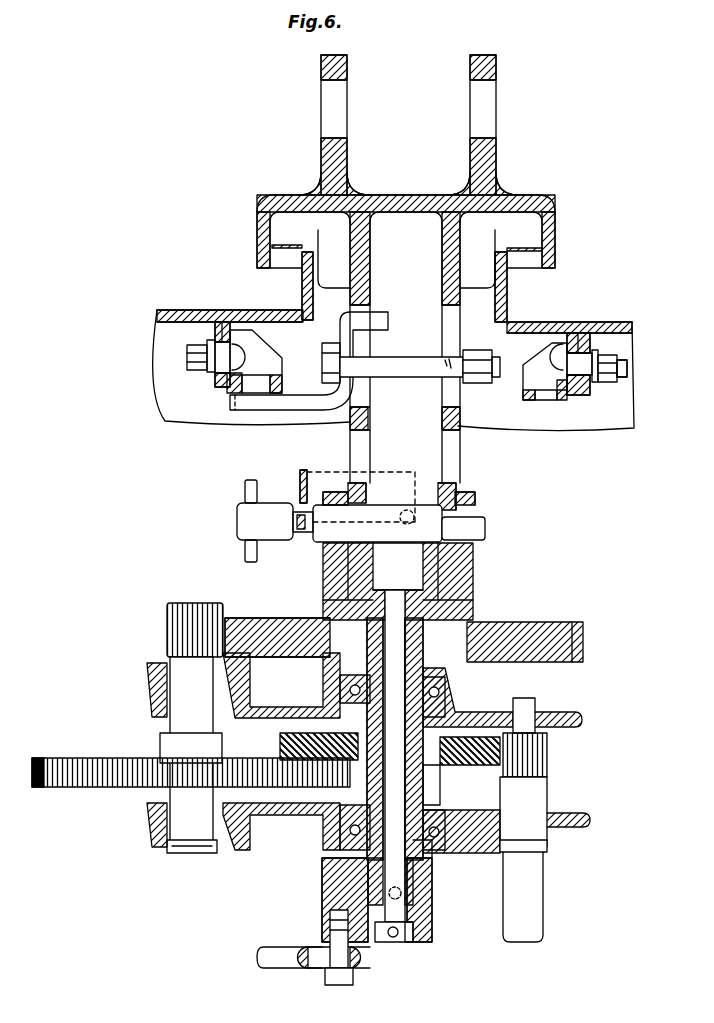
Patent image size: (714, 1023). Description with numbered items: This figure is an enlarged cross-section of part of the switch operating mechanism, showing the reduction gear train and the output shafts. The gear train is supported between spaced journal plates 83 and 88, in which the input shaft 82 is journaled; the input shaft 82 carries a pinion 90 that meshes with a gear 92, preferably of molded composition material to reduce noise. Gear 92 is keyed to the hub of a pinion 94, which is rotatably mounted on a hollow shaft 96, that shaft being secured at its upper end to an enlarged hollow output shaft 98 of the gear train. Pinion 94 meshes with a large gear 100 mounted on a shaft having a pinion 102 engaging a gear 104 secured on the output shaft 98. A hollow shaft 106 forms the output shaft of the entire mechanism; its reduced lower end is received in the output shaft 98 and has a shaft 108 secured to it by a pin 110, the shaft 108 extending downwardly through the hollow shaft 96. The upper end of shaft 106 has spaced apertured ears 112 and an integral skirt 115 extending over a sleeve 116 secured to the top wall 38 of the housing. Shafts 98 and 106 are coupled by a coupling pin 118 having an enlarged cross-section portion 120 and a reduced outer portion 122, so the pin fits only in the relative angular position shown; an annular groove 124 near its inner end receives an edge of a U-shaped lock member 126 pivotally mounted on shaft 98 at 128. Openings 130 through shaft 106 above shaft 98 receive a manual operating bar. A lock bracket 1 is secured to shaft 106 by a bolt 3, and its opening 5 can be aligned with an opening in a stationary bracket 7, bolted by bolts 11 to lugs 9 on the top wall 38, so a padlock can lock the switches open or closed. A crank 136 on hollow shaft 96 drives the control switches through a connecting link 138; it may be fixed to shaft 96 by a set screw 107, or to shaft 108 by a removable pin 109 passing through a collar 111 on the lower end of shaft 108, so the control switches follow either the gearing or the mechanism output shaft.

The lock bracket 1 is at (278, 410).
The bolt 3 is at (322, 357).
The opening 5 is at (235, 403).
The bracket 7 is at (283, 389).
The lug 9 is at (213, 333).
The bolt 11 is at (618, 380).
The top wall 38 is at (237, 303).
The input shaft 82 is at (528, 912).
The journal plate 83 is at (582, 819).
The journal plate 88 is at (568, 718).
The pinion 90 is at (547, 752).
The gear 92 is at (462, 766).
The pinion 94 is at (440, 800).
The hollow shaft 96 is at (432, 870).
The output shaft 98 is at (474, 584).
The large gear 100 is at (83, 788).
The pinion 102 is at (178, 621).
The gear 104 is at (268, 618).
The hollow shaft 106 is at (460, 423).
The set screw 107 is at (410, 894).
The shaft 108 is at (413, 920).
The removable pin 109 is at (394, 946).
The pin 110 is at (440, 607).
The collar 111 is at (412, 940).
The apertured ears 112 is at (321, 150).
The skirt 115 is at (548, 264).
The sleeve 116 is at (501, 296).
The coupling pin 118 is at (240, 511).
The enlarged cross-section portion 120 is at (386, 515).
The outer portion 122 is at (476, 521).
The annular groove 124 is at (307, 532).
The lock member 126 is at (300, 480).
The pivot 128 is at (404, 523).
The openings 130 is at (350, 450).
The crank 136 is at (322, 874).
The connecting link 138 is at (300, 963).